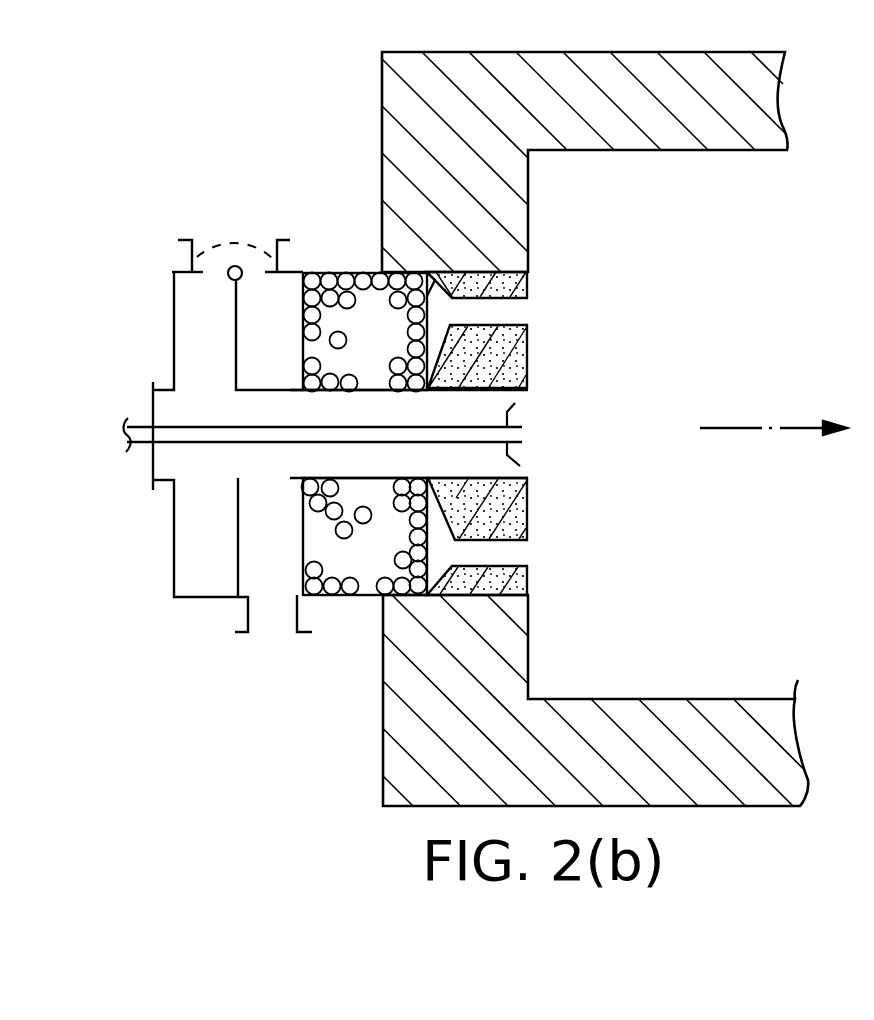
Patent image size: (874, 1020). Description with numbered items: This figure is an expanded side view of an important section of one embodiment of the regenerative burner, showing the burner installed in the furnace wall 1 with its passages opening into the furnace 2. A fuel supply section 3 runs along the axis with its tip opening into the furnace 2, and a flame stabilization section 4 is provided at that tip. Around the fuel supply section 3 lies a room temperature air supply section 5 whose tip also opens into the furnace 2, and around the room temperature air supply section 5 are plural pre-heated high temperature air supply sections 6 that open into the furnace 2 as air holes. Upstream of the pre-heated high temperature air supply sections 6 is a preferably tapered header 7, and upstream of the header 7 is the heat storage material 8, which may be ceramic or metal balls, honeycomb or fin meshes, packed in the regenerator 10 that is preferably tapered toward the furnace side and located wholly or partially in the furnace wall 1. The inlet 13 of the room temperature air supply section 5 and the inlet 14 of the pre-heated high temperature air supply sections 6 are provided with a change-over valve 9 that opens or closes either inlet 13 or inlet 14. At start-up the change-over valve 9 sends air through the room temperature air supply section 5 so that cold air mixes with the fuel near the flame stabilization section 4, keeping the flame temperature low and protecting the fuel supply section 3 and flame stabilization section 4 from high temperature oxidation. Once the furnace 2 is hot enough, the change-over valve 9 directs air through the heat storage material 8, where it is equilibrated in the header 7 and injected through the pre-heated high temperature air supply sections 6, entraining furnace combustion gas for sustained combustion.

The furnace wall 1 is at (529, 669).
The furnace 2 is at (755, 250).
The fuel supply section 3 is at (522, 427).
The flame stabilization section 4 is at (515, 403).
The room temperature air supply section 5 is at (488, 402).
The pre-heated high temperature air supply sections 6 is at (505, 310).
The header 7 is at (430, 275).
The heat storage material 8 is at (325, 275).
The change-over valve 9 is at (228, 268).
The regenerator 10 is at (370, 328).
The inlet of the room temperature air supply section 13 is at (190, 286).
The inlet of the pre-heated high temperature air supply sections 14 is at (258, 287).